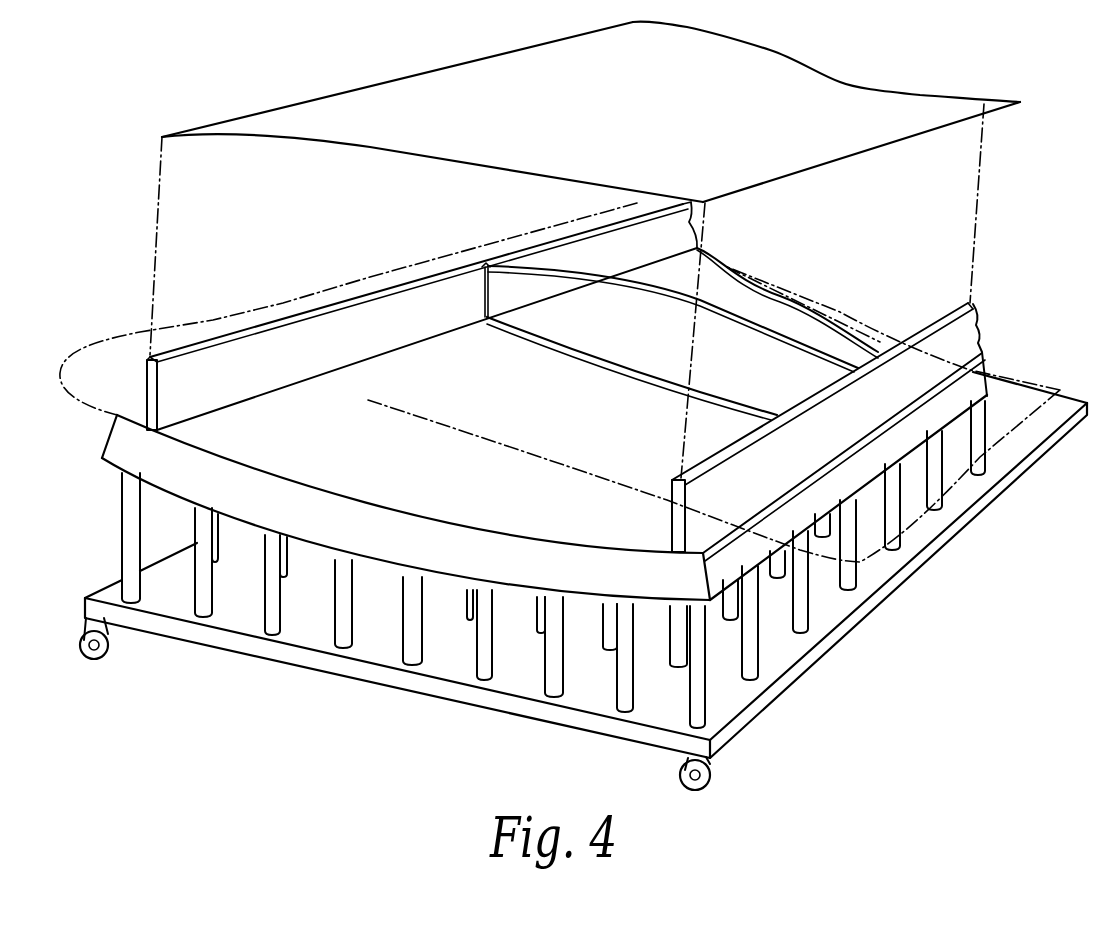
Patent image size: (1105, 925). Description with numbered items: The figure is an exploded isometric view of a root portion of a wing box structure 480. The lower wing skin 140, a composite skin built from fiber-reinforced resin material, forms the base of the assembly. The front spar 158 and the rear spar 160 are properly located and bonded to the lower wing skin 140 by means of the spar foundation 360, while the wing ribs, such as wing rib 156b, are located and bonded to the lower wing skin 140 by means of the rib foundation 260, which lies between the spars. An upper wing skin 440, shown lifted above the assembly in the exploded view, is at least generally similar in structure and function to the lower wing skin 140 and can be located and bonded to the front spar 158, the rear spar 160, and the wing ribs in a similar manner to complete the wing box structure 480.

The wing box structure 480 is at (890, 45).
The upper wing skin 440 is at (405, 95).
The lower wing skin 140 is at (380, 483).
The spar foundation 360 is at (197, 423).
The front spar 158 is at (320, 312).
The wing rib 156b is at (764, 322).
The rib foundation 260 is at (610, 372).
The rear spar 160 is at (770, 457).